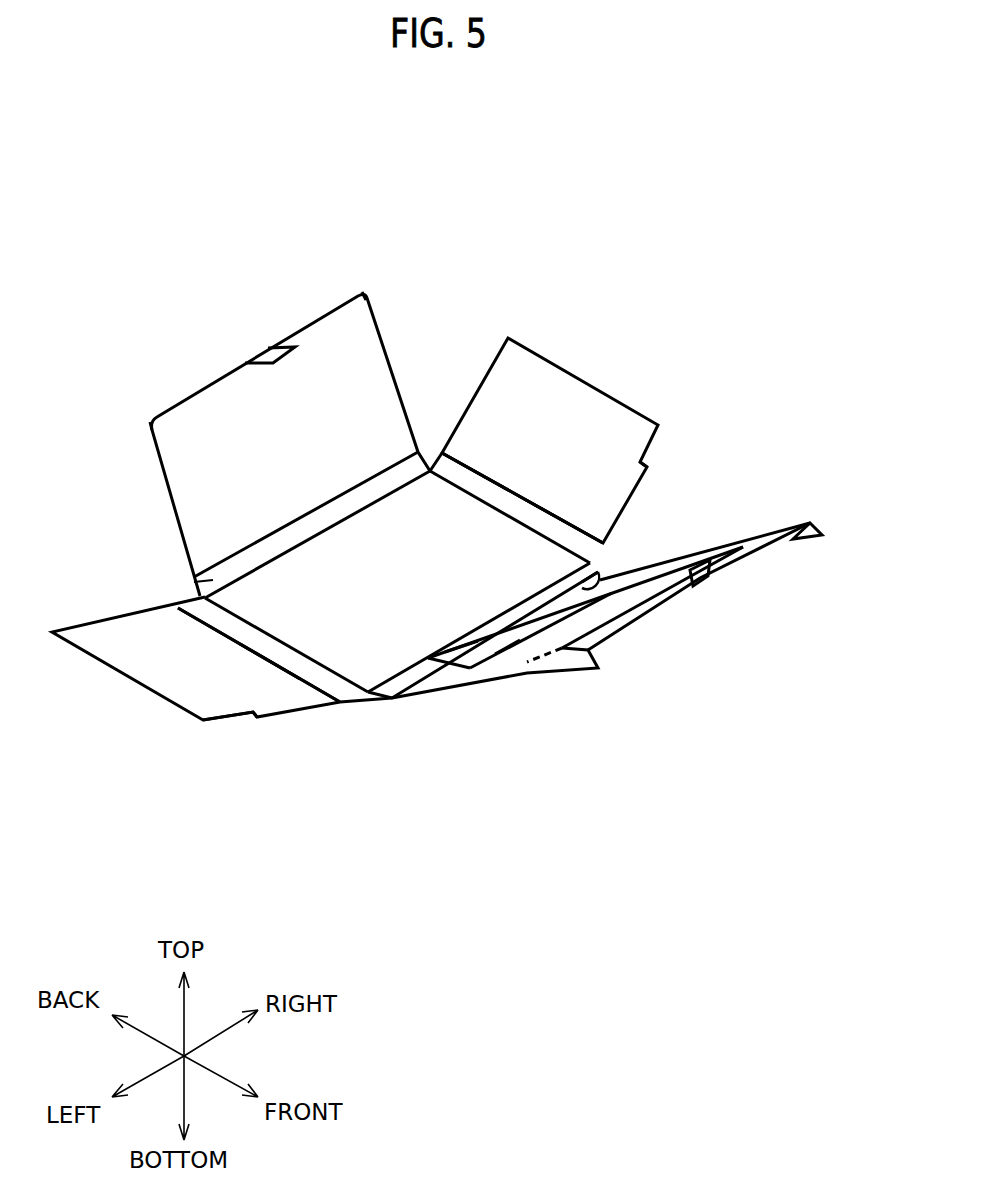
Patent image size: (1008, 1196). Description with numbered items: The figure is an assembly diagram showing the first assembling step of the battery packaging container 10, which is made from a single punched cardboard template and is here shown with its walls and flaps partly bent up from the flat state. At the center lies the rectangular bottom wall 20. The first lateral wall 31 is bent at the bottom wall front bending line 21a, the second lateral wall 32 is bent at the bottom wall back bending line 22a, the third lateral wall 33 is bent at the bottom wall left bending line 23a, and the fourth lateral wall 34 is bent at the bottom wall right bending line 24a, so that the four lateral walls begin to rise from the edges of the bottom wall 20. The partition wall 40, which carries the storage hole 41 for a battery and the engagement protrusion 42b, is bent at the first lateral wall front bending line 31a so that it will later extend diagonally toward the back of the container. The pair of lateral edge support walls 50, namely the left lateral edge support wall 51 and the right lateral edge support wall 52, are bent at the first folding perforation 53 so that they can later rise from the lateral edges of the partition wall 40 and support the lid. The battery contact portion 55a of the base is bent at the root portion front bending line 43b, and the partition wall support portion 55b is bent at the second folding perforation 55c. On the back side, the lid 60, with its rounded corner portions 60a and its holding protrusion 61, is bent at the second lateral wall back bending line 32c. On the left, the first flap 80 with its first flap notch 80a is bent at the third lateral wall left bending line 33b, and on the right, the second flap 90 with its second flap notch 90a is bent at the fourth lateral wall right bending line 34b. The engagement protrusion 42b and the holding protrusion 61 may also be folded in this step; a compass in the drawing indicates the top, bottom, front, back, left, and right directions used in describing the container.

The battery packaging container 10 is at (252, 180).
The bottom wall 20 is at (378, 661).
The bottom wall front bending line 21a is at (470, 643).
The bottom wall back bending line 22a is at (345, 516).
The bottom wall left bending line 23a is at (235, 610).
The bottom wall right bending line 24a is at (497, 507).
The first lateral wall 31 is at (393, 692).
The first lateral wall front bending line 31a is at (427, 673).
The second lateral wall 32 is at (197, 590).
The second lateral wall back bending line 32c is at (268, 520).
The third lateral wall 33 is at (333, 690).
The third lateral wall left bending line 33b is at (287, 672).
The fourth lateral wall 34 is at (445, 467).
The fourth lateral wall right bending line 34b is at (520, 493).
The partition wall 40 is at (812, 497).
The storage hole 41 is at (594, 610).
The engagement protrusion 42b is at (697, 575).
The root portion front bending line 43b is at (608, 567).
The pair of lateral edge support walls 50 is at (640, 668).
The left lateral edge support wall 51 is at (590, 673).
The right lateral edge support wall 52 is at (828, 540).
The first folding perforation 53 is at (824, 534).
The battery contact portion 55a is at (510, 647).
The partition wall support portion 55b is at (460, 647).
The second folding perforation 55c is at (600, 563).
The lid 60 is at (222, 440).
The corner portions 60a is at (364, 291).
The holding protrusion 61 is at (270, 352).
The first flap 80 is at (144, 656).
The first flap notch 80a is at (227, 720).
The second flap 90 is at (531, 387).
The second flap notch 90a is at (666, 450).